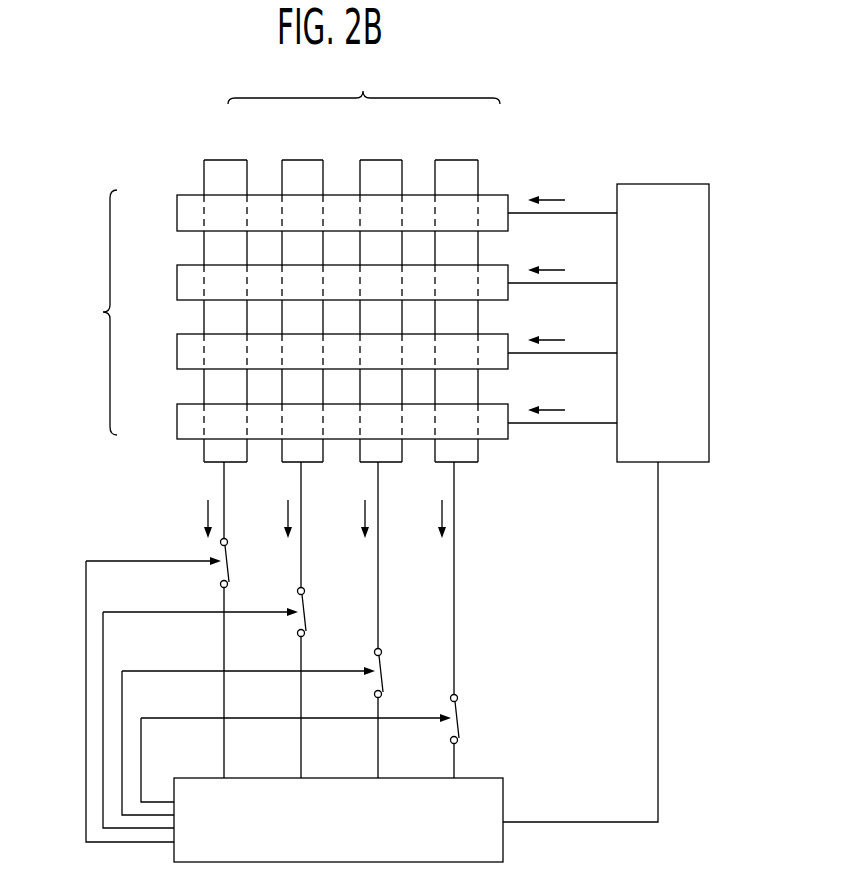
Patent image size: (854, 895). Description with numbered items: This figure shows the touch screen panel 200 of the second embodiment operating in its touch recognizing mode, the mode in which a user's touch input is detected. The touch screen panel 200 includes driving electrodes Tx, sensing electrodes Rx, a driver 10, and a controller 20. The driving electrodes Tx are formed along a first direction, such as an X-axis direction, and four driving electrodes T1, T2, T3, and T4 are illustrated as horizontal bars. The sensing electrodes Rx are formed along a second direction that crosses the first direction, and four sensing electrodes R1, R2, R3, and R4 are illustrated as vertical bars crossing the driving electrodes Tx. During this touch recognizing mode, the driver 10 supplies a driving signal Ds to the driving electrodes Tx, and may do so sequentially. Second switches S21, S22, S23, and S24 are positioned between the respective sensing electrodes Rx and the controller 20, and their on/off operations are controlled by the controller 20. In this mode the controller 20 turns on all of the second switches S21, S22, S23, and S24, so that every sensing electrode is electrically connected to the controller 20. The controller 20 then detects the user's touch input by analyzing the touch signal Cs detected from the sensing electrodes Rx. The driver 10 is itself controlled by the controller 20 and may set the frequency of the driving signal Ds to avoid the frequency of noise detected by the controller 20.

The touch screen panel 200 is at (616, 85).
The driver 10 is at (660, 184).
The controller 20 is at (490, 778).
The driving electrode T1 is at (177, 214).
The driving electrode T2 is at (177, 283).
The driving electrode T3 is at (177, 353).
The driving electrode T4 is at (177, 422).
The driving electrodes Tx is at (95, 312).
The sensing electrode R1 is at (226, 160).
The sensing electrode R2 is at (302, 160).
The third sensing electrode R3 is at (379, 160).
The sensing electrode R4 is at (456, 160).
The sensing electrodes Rx is at (364, 83).
The driving signal Ds is at (559, 305).
The touch signal Cs is at (325, 504).
The second switch S21 is at (174, 652).
The second switch S22 is at (220, 645).
The second switch S23 is at (268, 638).
The second switch S24 is at (316, 632).